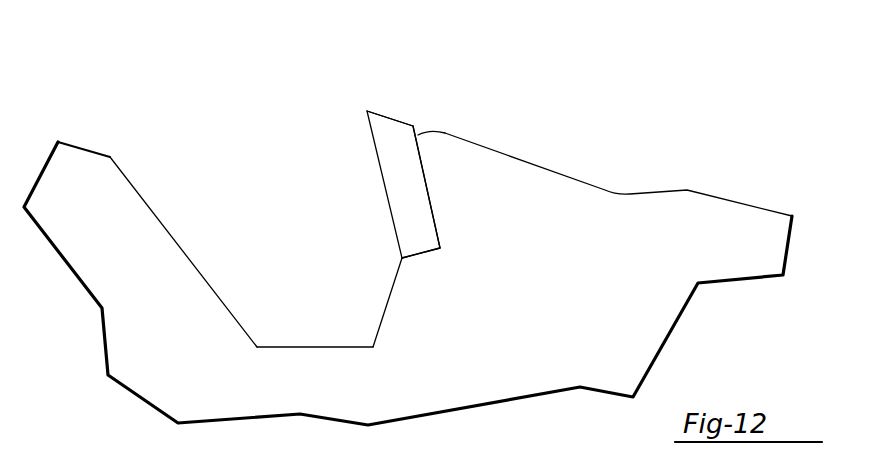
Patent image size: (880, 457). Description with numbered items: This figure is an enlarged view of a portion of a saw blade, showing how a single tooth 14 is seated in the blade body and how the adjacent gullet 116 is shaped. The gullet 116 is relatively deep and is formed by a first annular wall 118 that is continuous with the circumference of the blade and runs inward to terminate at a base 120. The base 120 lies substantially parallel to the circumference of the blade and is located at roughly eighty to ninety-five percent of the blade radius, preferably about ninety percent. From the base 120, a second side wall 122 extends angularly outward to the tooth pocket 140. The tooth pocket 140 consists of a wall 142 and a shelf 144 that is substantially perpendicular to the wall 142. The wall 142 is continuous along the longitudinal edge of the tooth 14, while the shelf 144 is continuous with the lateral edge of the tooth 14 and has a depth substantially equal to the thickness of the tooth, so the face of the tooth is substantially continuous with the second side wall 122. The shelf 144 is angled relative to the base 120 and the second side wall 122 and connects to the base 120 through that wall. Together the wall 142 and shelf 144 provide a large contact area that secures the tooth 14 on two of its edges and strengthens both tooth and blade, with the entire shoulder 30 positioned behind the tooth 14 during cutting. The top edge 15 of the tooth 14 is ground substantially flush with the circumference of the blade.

The tooth 14 is at (361, 96).
The top edge 15 is at (390, 117).
The shoulder 30 is at (678, 189).
The gullet 116 is at (284, 205).
The first annular wall 118 is at (163, 226).
The base 120 is at (308, 347).
The second side wall 122 is at (389, 297).
The tooth pocket 140 is at (424, 124).
The wall 142 is at (426, 182).
The shelf 144 is at (412, 255).